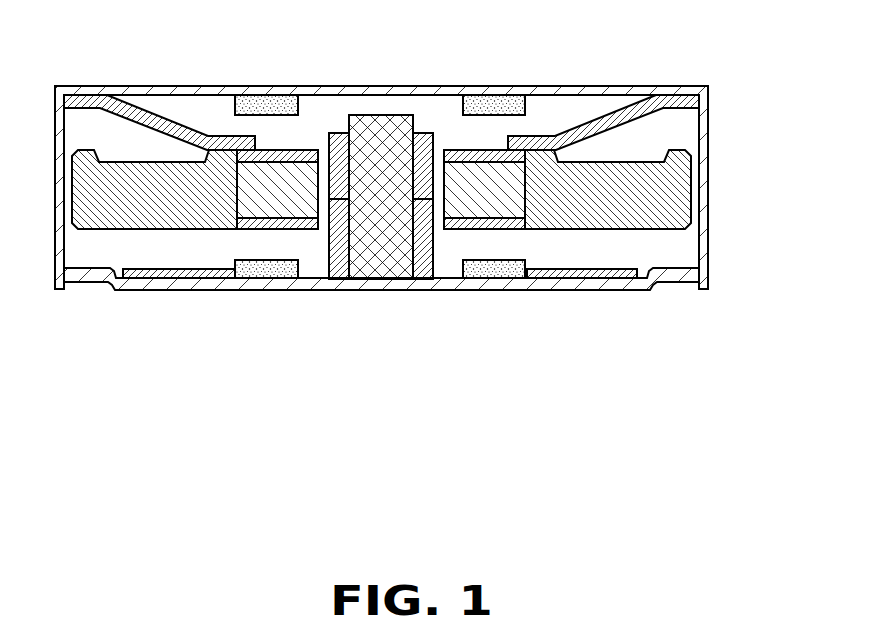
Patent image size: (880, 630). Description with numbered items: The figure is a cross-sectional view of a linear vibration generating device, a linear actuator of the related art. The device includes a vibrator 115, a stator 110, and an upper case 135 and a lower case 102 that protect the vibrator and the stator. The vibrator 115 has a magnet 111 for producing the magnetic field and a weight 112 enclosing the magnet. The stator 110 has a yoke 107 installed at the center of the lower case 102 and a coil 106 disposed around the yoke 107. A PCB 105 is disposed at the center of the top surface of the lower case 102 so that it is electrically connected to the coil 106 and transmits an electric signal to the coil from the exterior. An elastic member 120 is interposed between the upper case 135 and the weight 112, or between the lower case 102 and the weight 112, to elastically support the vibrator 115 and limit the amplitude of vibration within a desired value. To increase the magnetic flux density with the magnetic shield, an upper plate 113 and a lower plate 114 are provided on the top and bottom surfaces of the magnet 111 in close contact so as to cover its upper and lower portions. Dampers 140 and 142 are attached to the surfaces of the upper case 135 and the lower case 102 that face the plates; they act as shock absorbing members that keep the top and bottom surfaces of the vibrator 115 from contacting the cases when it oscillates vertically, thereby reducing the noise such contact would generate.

The lower case 102 is at (676, 280).
The PCB 105 is at (140, 276).
The coil 106 is at (340, 269).
The yoke 107 is at (397, 260).
The stator 110 is at (374, 263).
The magnet 111 is at (498, 208).
The weight 112 is at (640, 212).
The upper plate 113 is at (258, 225).
The lower plate 114 is at (305, 157).
The vibrator 115 is at (567, 271).
The elastic member 120 is at (597, 123).
The upper case 135 is at (704, 125).
The damper 140 is at (257, 105).
The damper 142 is at (273, 270).